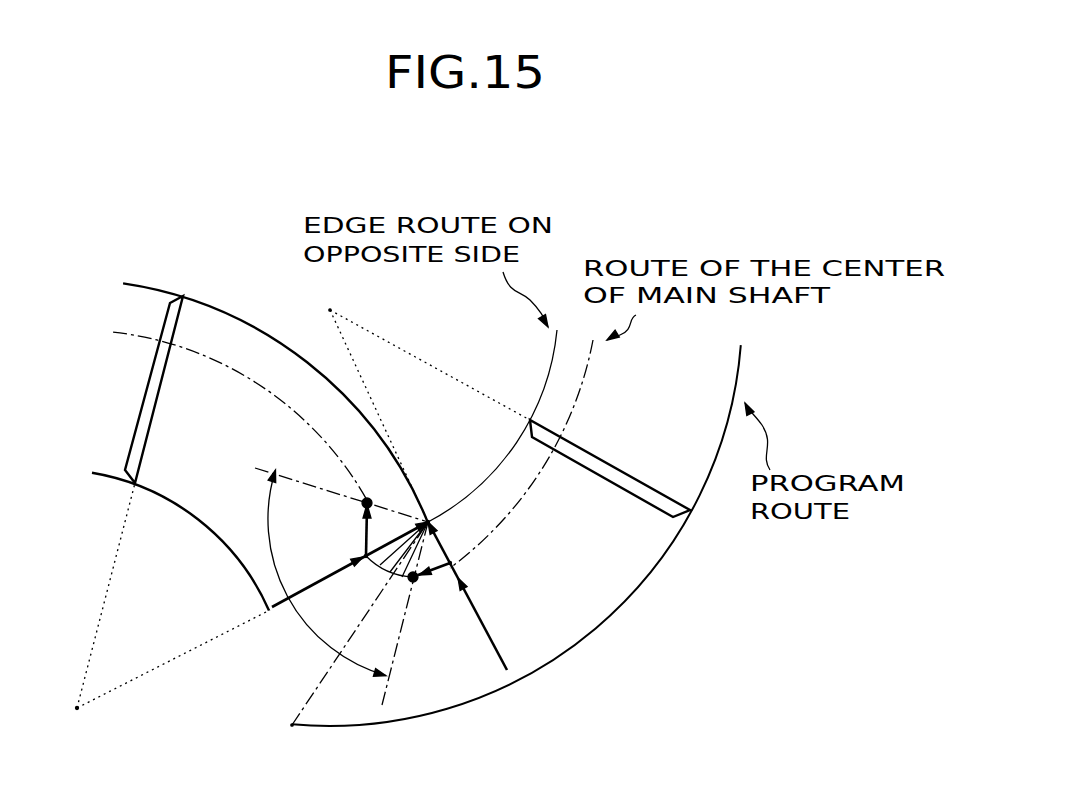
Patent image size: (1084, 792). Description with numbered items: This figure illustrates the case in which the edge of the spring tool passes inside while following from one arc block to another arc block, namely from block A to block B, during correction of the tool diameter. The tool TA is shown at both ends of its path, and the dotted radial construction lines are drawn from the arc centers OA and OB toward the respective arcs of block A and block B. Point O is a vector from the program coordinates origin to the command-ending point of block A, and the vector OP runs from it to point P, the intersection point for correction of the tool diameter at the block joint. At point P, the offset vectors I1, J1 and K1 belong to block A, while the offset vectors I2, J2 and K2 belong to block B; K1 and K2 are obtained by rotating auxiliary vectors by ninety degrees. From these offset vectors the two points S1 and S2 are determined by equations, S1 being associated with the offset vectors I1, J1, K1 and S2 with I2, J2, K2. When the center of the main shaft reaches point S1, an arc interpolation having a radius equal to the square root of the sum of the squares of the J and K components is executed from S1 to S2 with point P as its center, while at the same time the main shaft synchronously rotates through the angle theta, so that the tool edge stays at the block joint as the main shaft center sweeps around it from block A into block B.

The block A is at (260, 446).
The block B is at (516, 535).
The tool (cutter) TA is at (612, 473).
The center of arc A OA is at (168, 619).
The center of arc B OB is at (421, 399).
The point O is at (282, 746).
The point P is at (435, 502).
The offset vector I1 is at (350, 564).
The offset vector I2 is at (469, 596).
The offset vector J1 is at (367, 558).
The offset vector J2 is at (449, 558).
The offset vector K1 is at (366, 538).
The offset vector K2 is at (435, 578).
The point S1 is at (369, 499).
The point S2 is at (414, 583).